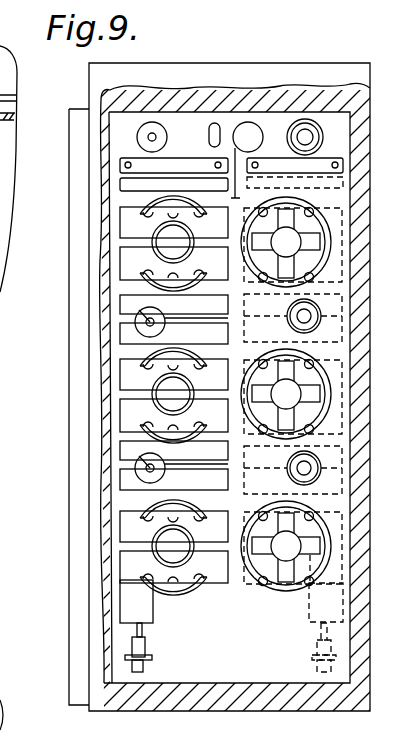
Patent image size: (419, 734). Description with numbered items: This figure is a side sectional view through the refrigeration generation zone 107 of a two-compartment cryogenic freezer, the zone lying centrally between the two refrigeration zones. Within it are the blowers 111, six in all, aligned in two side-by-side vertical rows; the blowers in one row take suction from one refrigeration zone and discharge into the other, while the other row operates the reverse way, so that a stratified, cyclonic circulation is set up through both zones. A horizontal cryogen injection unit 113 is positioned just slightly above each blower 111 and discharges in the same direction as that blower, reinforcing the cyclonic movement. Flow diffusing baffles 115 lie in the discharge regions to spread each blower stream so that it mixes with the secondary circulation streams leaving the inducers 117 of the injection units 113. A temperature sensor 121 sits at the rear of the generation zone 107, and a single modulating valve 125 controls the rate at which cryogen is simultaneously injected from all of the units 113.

The refrigeration generation zone 107 is at (318, 90).
The blower 111 is at (167, 248).
The cryogen injection unit 113 is at (154, 634).
The flow diffusing baffle 115 is at (132, 372).
The inducer 117 is at (137, 333).
The temperature sensor 121 is at (213, 122).
The modulating valve 125 is at (243, 122).